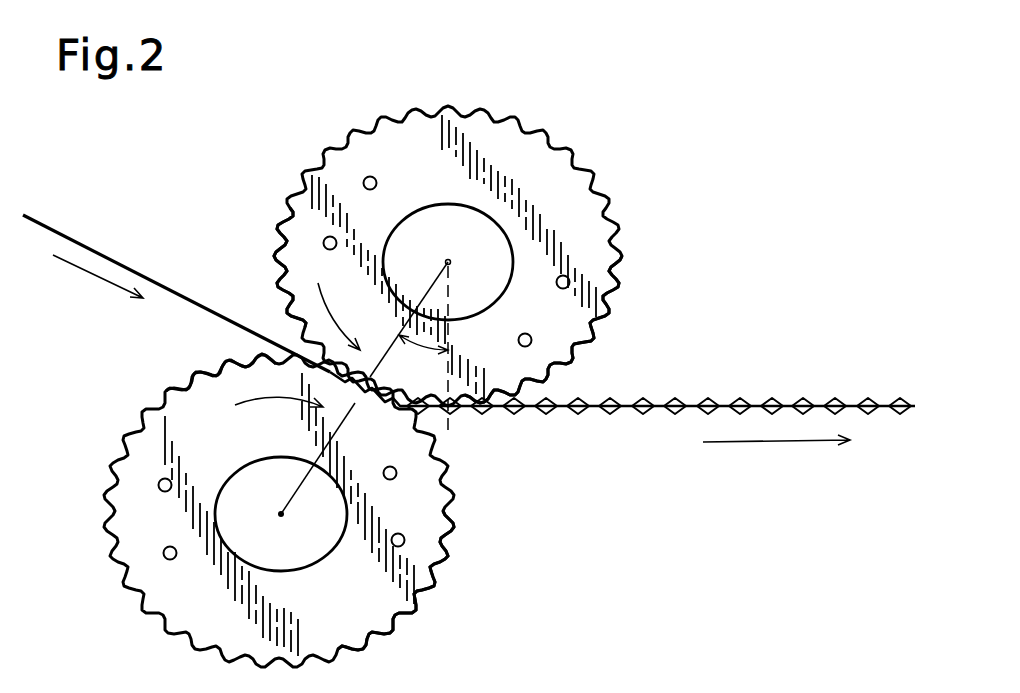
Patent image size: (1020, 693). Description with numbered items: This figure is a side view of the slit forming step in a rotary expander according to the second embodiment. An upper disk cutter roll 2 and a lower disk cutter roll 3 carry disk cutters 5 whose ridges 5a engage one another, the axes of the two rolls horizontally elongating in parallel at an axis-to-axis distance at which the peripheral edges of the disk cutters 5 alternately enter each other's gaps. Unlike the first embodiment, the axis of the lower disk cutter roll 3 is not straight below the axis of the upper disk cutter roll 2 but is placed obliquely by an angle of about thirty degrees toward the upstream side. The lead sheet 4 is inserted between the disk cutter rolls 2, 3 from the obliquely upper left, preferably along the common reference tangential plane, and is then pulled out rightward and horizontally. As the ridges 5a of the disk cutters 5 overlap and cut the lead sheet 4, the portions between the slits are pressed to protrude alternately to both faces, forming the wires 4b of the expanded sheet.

The disk cutter roll 2 is at (286, 152).
The disk cutter roll 3 is at (117, 607).
The lead sheet 4 is at (113, 260).
The wires 4b is at (643, 400).
The disk cutters 5 is at (573, 188).
The ridges 5a is at (280, 289).